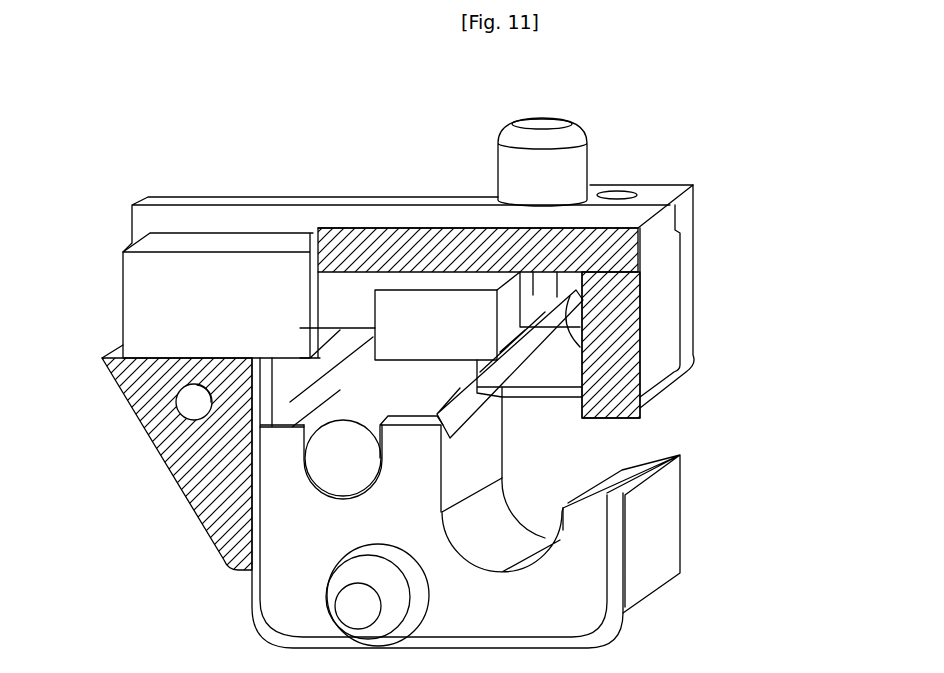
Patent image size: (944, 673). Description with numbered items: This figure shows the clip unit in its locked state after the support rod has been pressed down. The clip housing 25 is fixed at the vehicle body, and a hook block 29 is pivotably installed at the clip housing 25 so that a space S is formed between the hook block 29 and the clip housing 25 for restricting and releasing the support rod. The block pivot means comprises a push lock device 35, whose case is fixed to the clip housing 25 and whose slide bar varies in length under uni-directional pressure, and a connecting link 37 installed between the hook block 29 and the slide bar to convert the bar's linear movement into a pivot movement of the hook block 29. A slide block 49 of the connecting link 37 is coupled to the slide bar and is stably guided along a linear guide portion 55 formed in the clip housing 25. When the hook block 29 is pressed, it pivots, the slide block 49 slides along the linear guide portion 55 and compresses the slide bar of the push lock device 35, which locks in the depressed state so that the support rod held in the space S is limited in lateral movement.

The push lock device 35 is at (223, 277).
The connecting link 37 is at (415, 385).
The slide block 49 is at (465, 307).
The linear guide portion 55 is at (585, 340).
The clip housing 25 is at (162, 431).
The hook block 29 is at (303, 573).
The space S is at (570, 474).